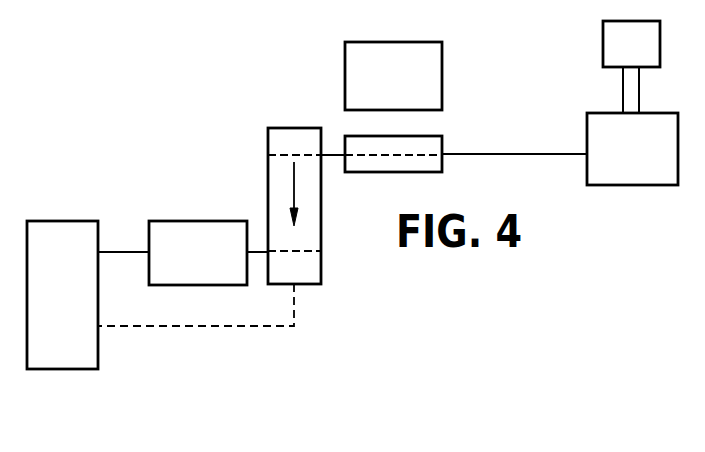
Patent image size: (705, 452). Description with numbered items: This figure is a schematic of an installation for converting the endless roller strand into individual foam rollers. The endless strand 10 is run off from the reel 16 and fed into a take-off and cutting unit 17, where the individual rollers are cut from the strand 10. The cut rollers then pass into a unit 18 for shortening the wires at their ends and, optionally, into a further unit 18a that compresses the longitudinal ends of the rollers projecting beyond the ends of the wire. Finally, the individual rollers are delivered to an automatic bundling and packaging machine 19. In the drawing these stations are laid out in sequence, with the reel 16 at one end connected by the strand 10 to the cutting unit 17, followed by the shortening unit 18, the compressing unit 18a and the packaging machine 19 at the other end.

The strand 10 is at (513, 152).
The reel 16 is at (653, 118).
The take-off and cutting unit 17 is at (377, 53).
The unit for shortening the wires 18 is at (288, 135).
The unit for compressing the longitudinal ends of the rollers 18a is at (203, 235).
The automatic bundling and packaging machine 19 is at (65, 232).